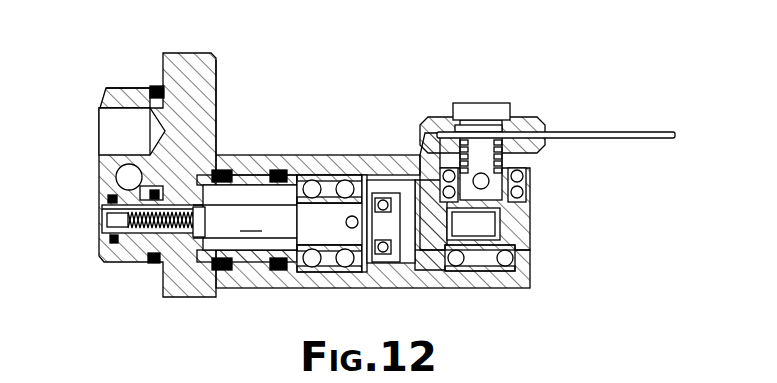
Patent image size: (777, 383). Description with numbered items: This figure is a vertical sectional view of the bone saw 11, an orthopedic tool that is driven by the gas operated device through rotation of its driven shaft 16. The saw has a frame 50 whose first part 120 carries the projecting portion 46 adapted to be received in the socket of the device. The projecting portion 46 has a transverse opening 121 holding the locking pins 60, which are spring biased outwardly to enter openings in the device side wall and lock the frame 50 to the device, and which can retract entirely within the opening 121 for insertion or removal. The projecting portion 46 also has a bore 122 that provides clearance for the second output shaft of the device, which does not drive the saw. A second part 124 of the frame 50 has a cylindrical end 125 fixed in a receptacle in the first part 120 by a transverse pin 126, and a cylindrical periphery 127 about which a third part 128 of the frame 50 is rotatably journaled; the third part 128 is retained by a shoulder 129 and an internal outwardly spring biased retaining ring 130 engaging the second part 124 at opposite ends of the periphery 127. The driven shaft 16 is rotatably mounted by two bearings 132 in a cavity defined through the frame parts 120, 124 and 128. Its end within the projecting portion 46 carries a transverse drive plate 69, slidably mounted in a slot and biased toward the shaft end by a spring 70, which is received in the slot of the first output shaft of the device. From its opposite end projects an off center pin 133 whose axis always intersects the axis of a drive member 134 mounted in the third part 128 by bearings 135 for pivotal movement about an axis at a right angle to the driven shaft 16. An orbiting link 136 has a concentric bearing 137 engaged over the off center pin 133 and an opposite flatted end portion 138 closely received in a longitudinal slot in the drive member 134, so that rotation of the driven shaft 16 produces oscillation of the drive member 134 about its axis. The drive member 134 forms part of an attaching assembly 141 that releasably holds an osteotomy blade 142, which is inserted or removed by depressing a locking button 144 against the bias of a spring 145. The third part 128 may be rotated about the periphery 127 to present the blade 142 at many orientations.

The bone saw 11 is at (353, 100).
The driven shaft 16 is at (280, 217).
The projecting portion 46 is at (117, 88).
The frame 50 is at (223, 64).
The locking pins 60 is at (113, 184).
The drive plate 69 is at (108, 220).
The spring 70 is at (171, 235).
The first part 120 is at (195, 53).
The transverse opening 121 is at (118, 174).
The bore 122 is at (102, 108).
The second part 124 is at (257, 263).
The cylindrical end 125 is at (148, 255).
The transverse pin 126 is at (152, 188).
The cylindrical periphery 127 is at (266, 156).
The third part 128 is at (365, 275).
The shoulder 129 is at (308, 157).
The retaining ring 130 is at (225, 155).
The bearings 132 is at (337, 272).
The off center pin 133 is at (406, 265).
The drive member 134 is at (502, 198).
The bearings 135 is at (524, 176).
The orbiting link 136 is at (449, 272).
The concentric bearing 137 is at (390, 202).
The flatted end portion 138 is at (489, 222).
The attaching assembly 141 is at (538, 111).
The osteotomy blade 142 is at (665, 131).
The locking button 144 is at (488, 102).
The spring 145 is at (498, 152).